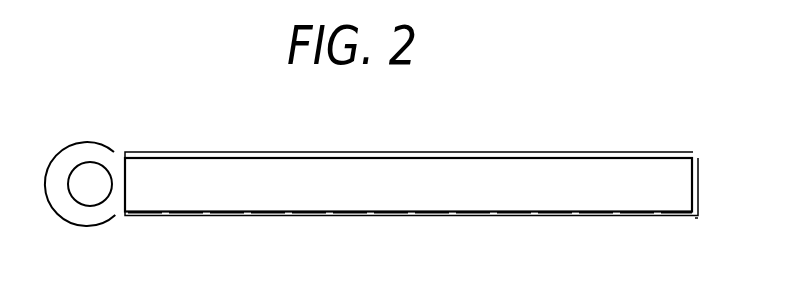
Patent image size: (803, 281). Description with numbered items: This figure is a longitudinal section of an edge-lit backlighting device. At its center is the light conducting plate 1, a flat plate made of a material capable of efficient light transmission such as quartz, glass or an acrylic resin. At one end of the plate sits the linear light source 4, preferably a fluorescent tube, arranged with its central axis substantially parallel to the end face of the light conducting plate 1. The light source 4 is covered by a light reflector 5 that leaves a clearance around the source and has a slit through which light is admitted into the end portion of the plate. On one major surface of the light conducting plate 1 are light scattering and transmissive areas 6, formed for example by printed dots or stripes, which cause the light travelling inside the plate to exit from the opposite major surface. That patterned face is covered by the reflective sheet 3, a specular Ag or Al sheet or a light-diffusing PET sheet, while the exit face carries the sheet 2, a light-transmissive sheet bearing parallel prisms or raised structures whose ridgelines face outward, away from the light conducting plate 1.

The light conducting plate 1 is at (525, 172).
The sheet 2 is at (332, 152).
The reflective sheet 3 is at (700, 190).
The linear light source 4 is at (90, 178).
The light reflector 5 is at (95, 228).
The light scattering and transmissive areas 6 is at (447, 215).